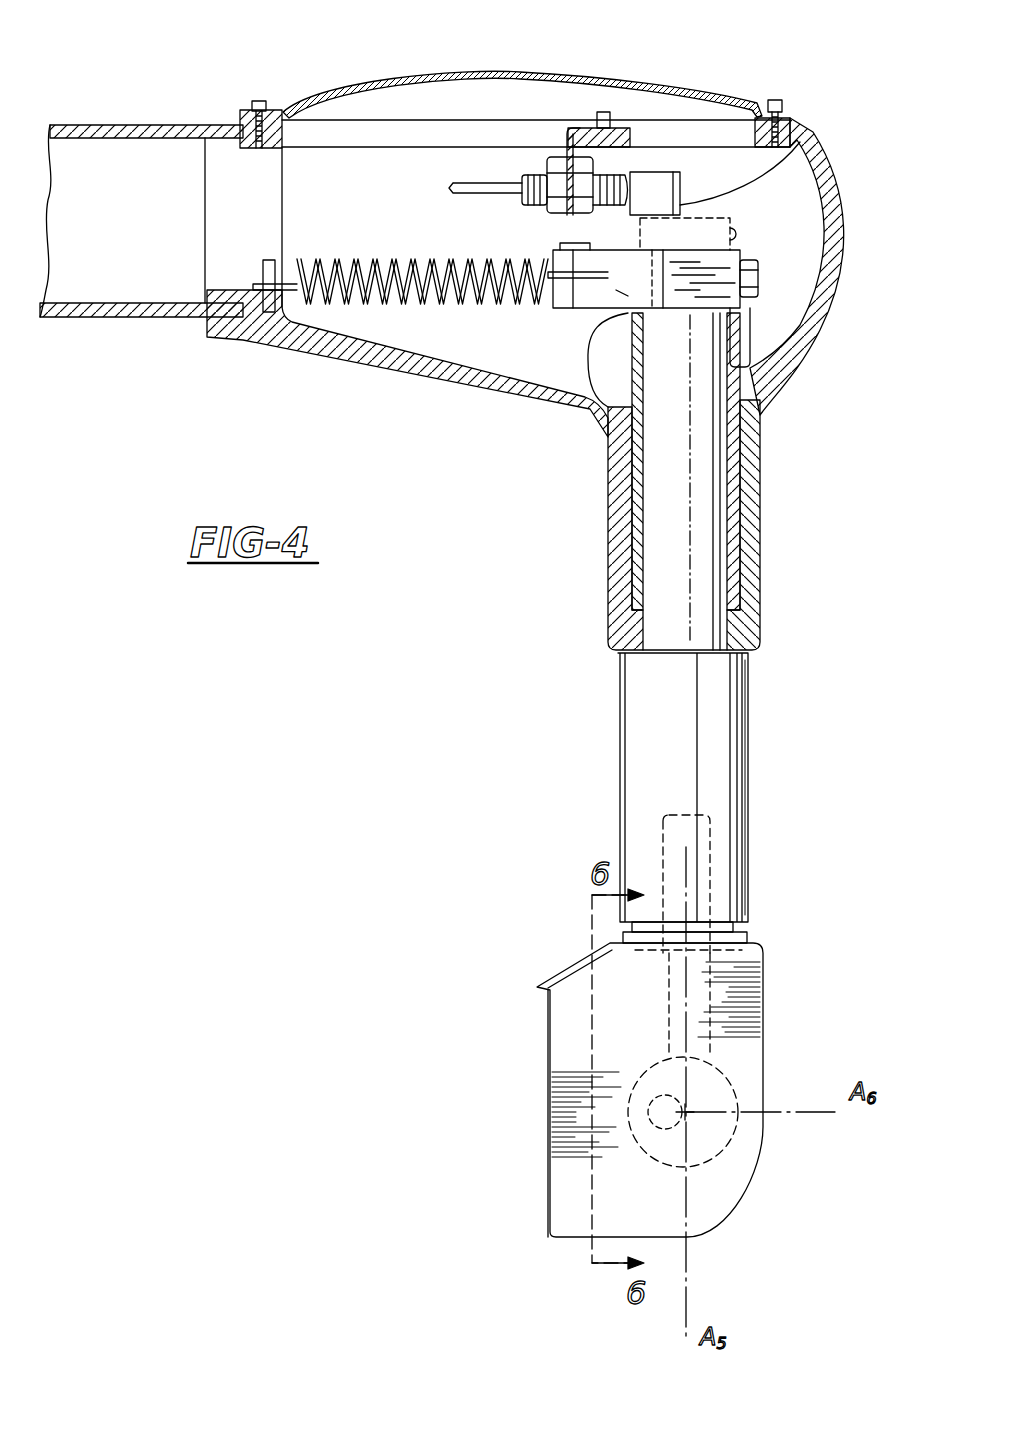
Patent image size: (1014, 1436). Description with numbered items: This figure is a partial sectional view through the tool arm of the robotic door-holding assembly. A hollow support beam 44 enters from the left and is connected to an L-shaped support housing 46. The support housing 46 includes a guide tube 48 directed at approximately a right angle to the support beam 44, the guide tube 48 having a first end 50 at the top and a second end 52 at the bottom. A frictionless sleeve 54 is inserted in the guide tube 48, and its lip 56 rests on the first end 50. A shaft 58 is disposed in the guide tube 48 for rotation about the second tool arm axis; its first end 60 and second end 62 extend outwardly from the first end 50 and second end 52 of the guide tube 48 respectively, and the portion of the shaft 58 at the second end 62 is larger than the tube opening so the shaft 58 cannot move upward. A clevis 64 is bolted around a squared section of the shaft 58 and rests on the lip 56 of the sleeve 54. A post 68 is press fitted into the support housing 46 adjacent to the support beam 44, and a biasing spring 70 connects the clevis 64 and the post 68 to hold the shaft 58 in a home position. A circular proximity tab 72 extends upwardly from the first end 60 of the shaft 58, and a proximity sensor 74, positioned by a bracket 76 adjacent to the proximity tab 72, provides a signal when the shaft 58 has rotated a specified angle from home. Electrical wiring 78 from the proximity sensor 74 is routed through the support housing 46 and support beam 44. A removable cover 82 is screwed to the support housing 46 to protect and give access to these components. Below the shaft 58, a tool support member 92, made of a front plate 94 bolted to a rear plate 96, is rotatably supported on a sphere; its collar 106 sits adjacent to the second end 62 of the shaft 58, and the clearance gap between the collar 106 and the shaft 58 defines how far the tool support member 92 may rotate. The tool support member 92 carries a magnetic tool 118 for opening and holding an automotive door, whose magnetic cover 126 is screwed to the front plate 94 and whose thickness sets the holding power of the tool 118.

The support beam 44 is at (103, 318).
The support housing 46 is at (536, 242).
The guide tube 48 is at (607, 568).
The first end 50 is at (752, 315).
The second end 52 is at (750, 677).
The frictionless sleeve 54 is at (643, 553).
The lip 56 is at (585, 412).
The shaft 58 is at (619, 775).
The first end 60 is at (745, 280).
The second end 62 is at (748, 925).
The clevis 64 is at (558, 252).
The post 68 is at (262, 283).
The biasing spring 70 is at (362, 262).
The proximity tab 72 is at (813, 130).
The proximity sensor 74 is at (566, 150).
The bracket 76 is at (585, 157).
The electrical wiring 78 is at (458, 189).
The removable cover 82 is at (730, 93).
The tool support member 92 is at (733, 1197).
The front plate 94 is at (572, 965).
The rear plate 96 is at (765, 1125).
The collar 106 is at (752, 941).
The tool 118 is at (538, 1152).
The magnetic cover 126 is at (538, 1030).